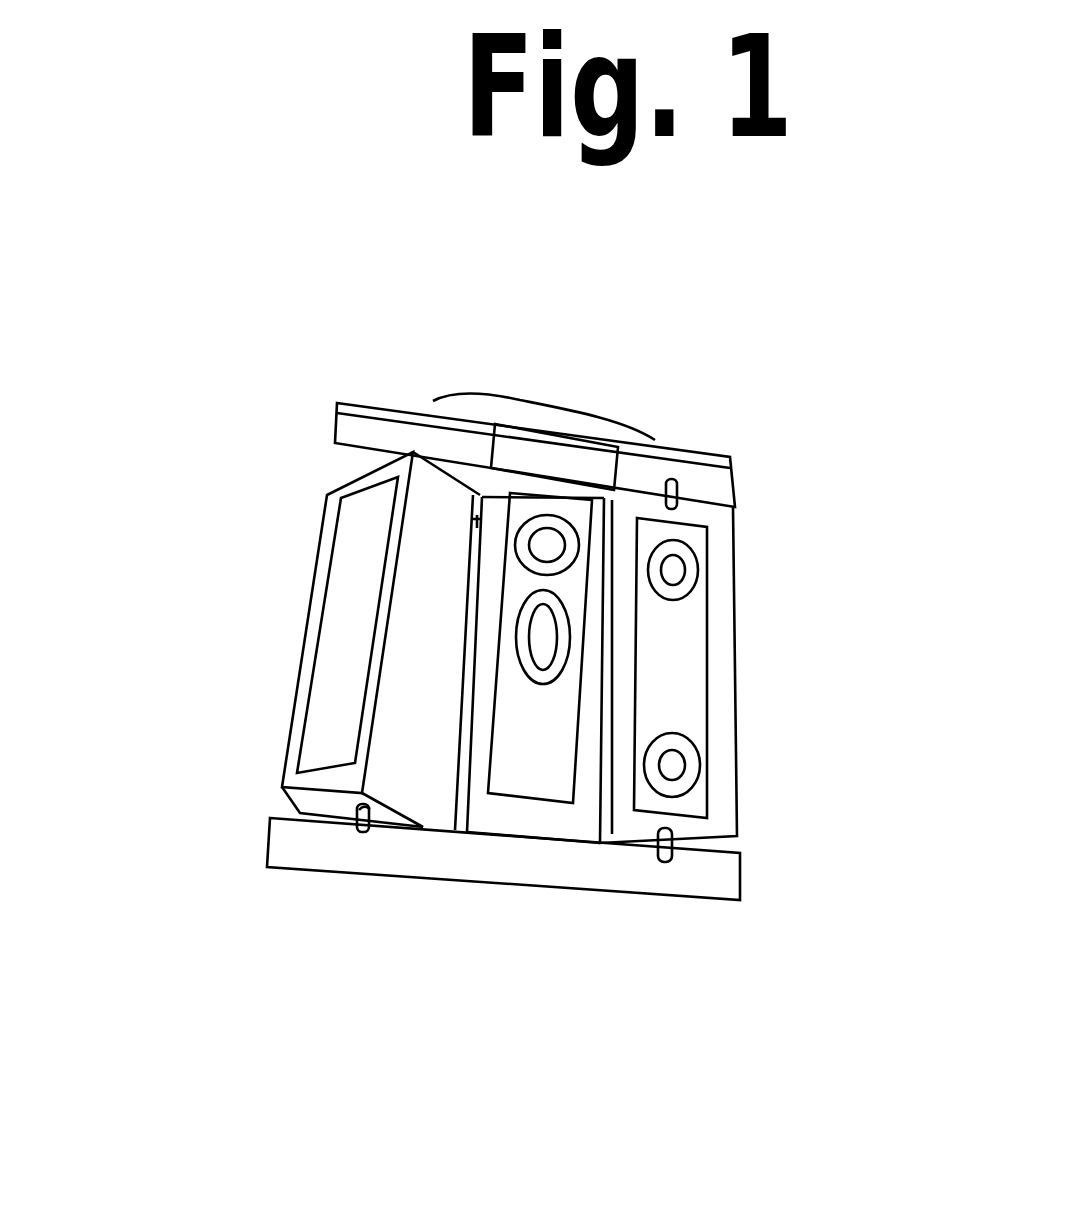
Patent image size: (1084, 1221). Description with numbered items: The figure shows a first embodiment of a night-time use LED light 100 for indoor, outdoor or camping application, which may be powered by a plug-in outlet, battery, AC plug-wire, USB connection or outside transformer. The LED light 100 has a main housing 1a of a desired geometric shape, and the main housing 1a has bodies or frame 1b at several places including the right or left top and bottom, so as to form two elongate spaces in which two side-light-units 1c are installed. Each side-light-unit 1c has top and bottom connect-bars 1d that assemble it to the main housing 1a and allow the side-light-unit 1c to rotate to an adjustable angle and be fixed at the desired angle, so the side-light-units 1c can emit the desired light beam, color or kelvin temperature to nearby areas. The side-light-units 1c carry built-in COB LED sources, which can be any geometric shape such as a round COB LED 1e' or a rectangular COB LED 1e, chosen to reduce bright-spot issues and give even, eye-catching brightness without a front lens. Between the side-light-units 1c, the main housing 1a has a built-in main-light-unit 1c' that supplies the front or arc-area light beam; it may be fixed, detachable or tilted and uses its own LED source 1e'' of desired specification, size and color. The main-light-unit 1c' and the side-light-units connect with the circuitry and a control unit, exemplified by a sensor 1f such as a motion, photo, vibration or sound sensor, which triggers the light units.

The LED light 100 is at (228, 427).
The main housing 1a is at (530, 835).
The frame 1b is at (378, 400).
The side-light-unit 1c is at (562, 647).
The main-light-unit 1c' is at (535, 799).
The connect-bar 1d is at (676, 478).
The rectangular COB LED 1e is at (501, 647).
The round COB LED 1e' is at (760, 671).
The COB LED of main-light-unit 1e'' is at (594, 762).
The sensor 1f is at (512, 437).